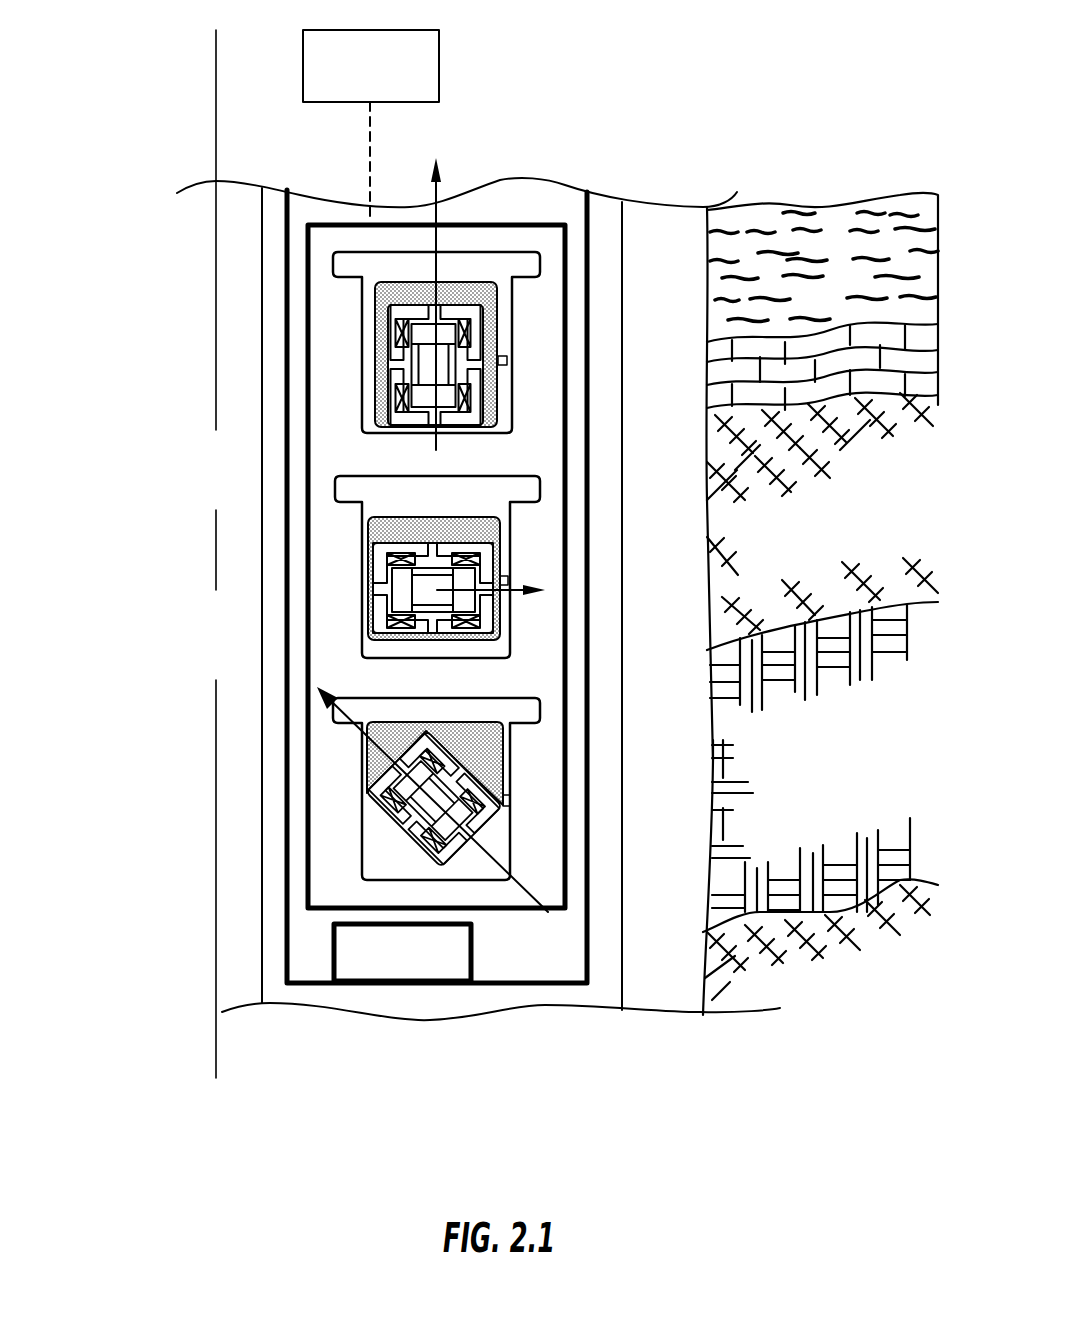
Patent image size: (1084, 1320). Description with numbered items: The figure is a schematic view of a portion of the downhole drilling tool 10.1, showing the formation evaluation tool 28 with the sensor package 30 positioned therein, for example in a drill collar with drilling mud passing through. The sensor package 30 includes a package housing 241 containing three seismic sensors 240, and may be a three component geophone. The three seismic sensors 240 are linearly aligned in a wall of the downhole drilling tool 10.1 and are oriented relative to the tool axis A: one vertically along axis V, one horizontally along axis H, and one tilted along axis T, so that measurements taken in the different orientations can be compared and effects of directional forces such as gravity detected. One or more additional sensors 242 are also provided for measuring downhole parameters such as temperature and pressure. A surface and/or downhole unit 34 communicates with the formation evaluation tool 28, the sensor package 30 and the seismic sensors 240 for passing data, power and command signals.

The downhole drilling tool 10.1 is at (188, 102).
The surface and/or downhole unit 34 is at (384, 81).
The seismic sensors 240 is at (352, 723).
The formation evaluation tool 28 is at (287, 868).
The sensor package 30 is at (308, 922).
The additional sensors 242 is at (403, 960).
The package housing 241 is at (548, 912).